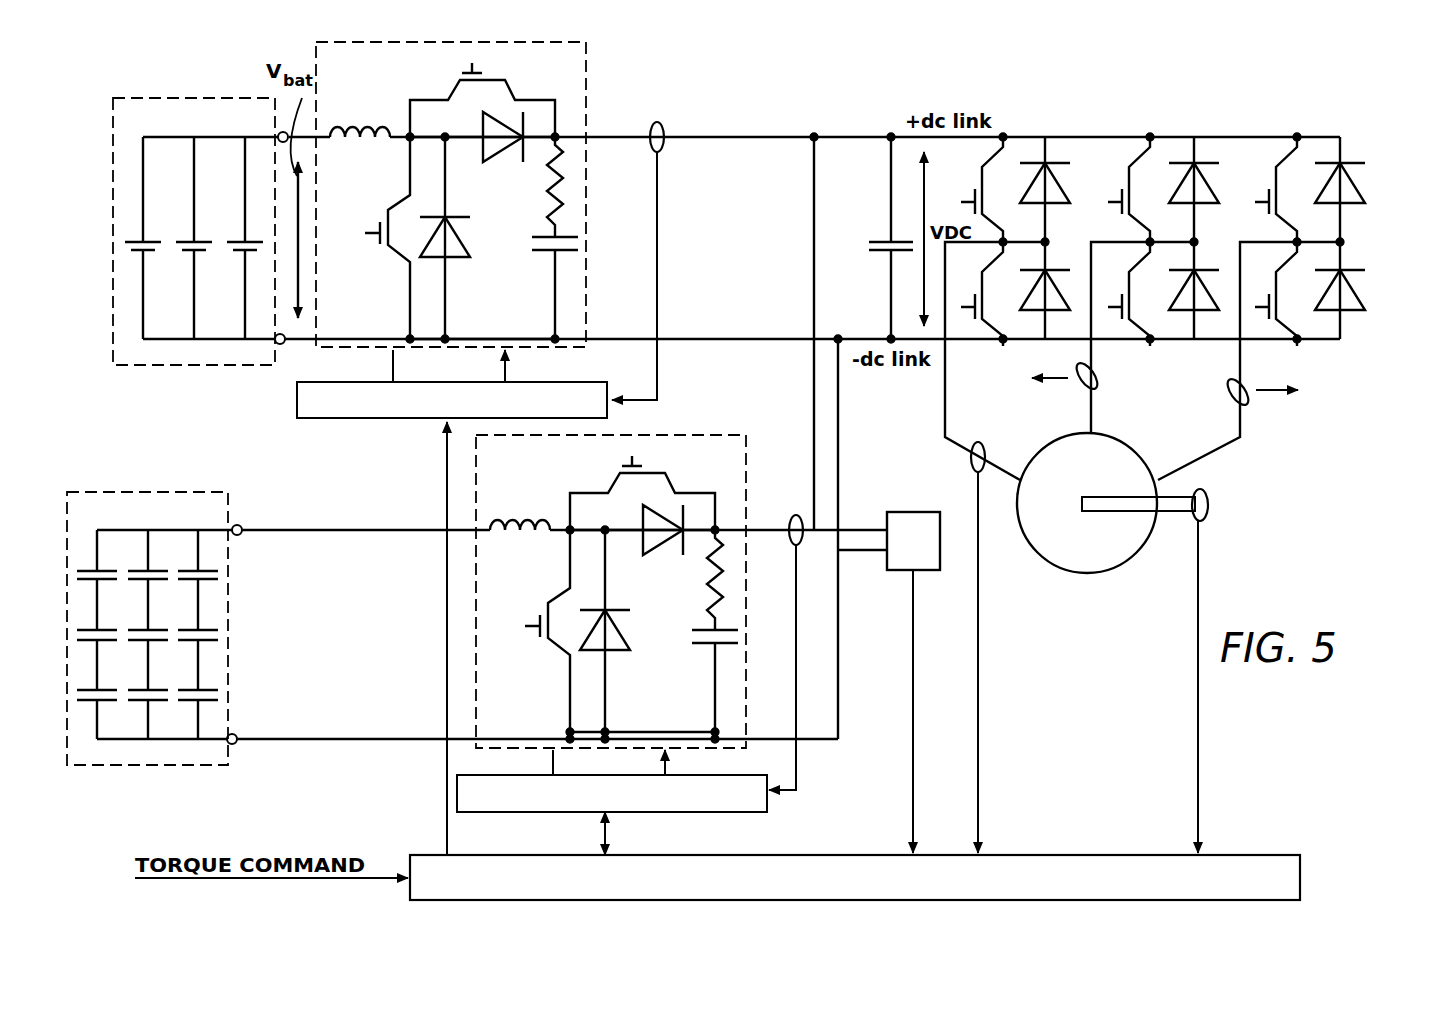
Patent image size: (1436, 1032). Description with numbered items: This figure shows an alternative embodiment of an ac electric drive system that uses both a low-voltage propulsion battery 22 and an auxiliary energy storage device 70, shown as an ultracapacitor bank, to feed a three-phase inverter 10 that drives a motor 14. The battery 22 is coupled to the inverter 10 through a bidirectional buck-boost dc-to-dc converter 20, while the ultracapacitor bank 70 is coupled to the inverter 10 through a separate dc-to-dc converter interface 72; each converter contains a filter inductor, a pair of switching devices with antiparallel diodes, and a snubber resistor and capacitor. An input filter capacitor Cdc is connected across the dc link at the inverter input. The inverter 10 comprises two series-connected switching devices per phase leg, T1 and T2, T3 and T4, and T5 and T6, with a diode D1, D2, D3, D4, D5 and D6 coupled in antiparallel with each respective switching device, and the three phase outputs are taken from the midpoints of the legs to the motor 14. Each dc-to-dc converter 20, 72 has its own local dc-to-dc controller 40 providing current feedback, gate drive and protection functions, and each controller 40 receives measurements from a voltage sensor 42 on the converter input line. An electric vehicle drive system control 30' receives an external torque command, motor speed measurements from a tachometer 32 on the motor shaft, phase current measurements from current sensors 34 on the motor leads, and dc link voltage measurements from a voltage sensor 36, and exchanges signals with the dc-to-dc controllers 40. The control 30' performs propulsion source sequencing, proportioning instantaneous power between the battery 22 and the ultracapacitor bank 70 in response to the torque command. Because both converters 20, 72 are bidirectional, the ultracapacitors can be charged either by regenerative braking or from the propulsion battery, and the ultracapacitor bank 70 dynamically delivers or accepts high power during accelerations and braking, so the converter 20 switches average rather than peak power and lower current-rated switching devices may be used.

The inverter 10 is at (1288, 92).
The motor 14 is at (1074, 544).
The dc-to-dc converter 20 is at (586, 60).
The low-voltage propulsion battery 22 is at (147, 98).
The electric vehicle drive system control 30' is at (855, 861).
The tachometer 32 is at (1192, 524).
The current sensors 34 is at (981, 439).
The voltage sensor 36 is at (920, 510).
The dc-to-dc controller 40 is at (607, 382).
The voltage sensor 42 is at (650, 148).
The auxiliary energy storage device 70 is at (83, 782).
The dc-to-dc converter interface 72 is at (700, 435).
The switching device T1 is at (1284, 164).
The switching device T2 is at (1280, 276).
The switching device T3 is at (1136, 164).
The switching device T4 is at (1130, 276).
The switching device T5 is at (989, 164).
The switching device T6 is at (984, 276).
The diode D1 is at (1354, 178).
The diode D2 is at (1354, 284).
The diode D3 is at (1214, 202).
The diode D4 is at (1204, 282).
The diode D5 is at (1024, 199).
The diode D6 is at (1052, 280).
The input filter capacitor Cdc is at (882, 240).